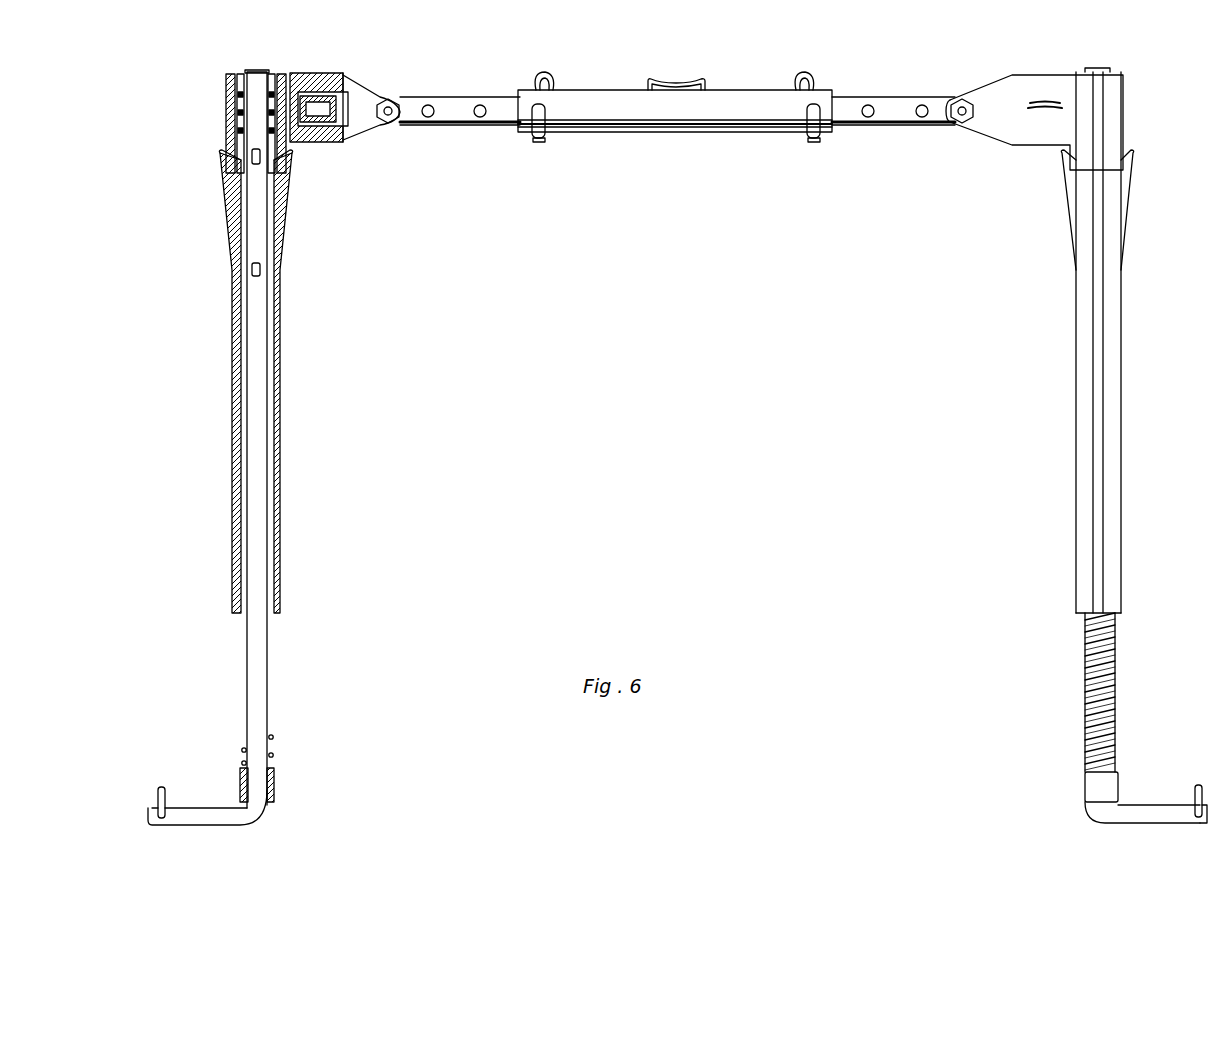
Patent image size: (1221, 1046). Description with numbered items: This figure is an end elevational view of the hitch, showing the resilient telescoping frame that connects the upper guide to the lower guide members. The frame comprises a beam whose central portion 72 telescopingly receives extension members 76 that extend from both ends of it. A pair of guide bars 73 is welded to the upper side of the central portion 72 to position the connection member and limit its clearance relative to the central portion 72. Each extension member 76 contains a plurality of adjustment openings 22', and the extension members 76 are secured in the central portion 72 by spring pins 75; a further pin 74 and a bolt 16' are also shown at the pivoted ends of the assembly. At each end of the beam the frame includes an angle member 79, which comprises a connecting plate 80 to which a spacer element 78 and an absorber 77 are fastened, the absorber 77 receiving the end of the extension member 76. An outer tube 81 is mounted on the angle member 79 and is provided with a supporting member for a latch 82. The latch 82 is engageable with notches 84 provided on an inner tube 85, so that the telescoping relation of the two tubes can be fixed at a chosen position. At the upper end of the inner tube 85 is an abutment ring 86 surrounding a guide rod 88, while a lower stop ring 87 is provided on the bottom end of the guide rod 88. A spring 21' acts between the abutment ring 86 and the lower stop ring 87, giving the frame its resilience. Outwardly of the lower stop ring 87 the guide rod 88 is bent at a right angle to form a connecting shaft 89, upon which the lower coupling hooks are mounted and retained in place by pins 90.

The pivot bolt 16' is at (952, 157).
The spring 21' is at (1146, 717).
The adjustment openings 22' is at (893, 144).
The central portion 72 is at (603, 115).
The guide bars 73 is at (655, 90).
The locking pin 74 is at (539, 142).
The spring pins 75 is at (795, 96).
The extension members 76 is at (470, 120).
The absorber 77 is at (318, 100).
The spacer element 78 is at (318, 142).
The angle member 79 is at (1112, 136).
The connecting plate 80 is at (372, 112).
The outer tube 81 is at (230, 105).
The latch 82 is at (232, 190).
The notches 84 is at (252, 269).
The inner tube 85 is at (278, 340).
The abutment ring 86 is at (240, 72).
The lower stop ring 87 is at (240, 778).
The guide rod 88 is at (258, 640).
The connecting shaft 89 is at (250, 822).
The pins 90 is at (160, 792).